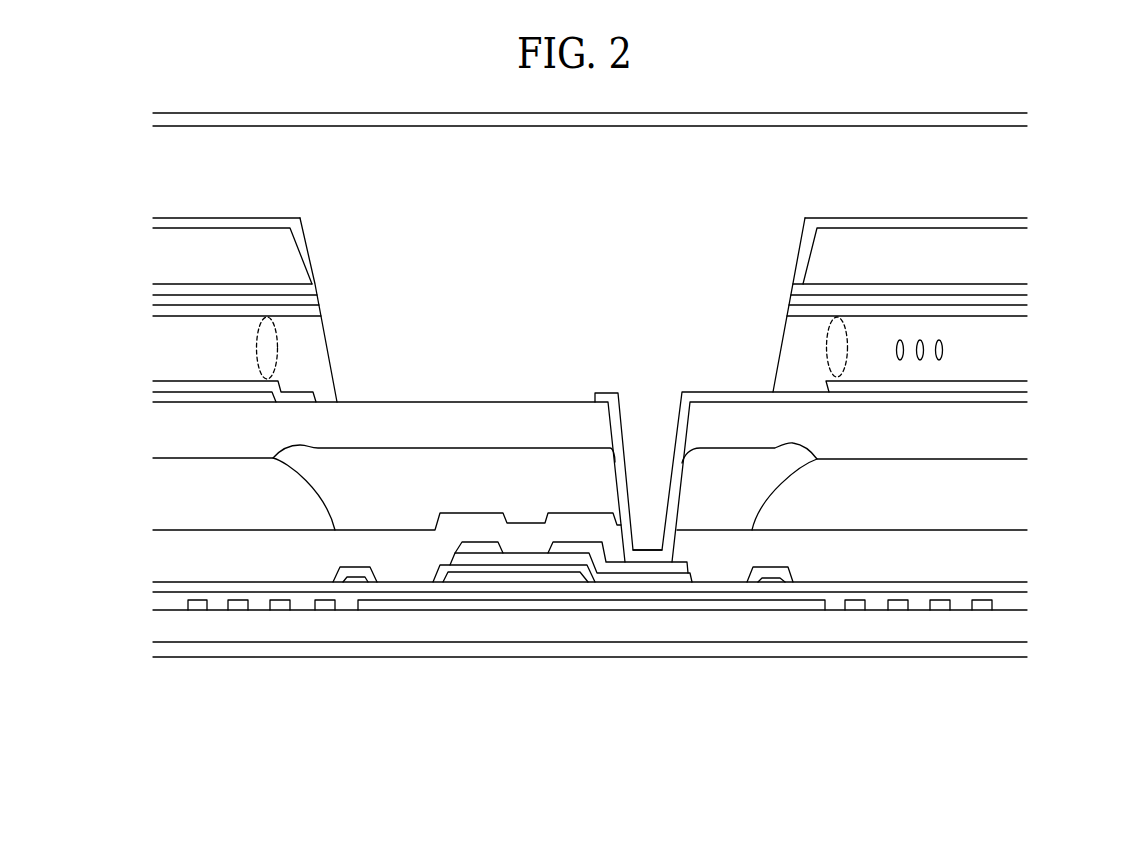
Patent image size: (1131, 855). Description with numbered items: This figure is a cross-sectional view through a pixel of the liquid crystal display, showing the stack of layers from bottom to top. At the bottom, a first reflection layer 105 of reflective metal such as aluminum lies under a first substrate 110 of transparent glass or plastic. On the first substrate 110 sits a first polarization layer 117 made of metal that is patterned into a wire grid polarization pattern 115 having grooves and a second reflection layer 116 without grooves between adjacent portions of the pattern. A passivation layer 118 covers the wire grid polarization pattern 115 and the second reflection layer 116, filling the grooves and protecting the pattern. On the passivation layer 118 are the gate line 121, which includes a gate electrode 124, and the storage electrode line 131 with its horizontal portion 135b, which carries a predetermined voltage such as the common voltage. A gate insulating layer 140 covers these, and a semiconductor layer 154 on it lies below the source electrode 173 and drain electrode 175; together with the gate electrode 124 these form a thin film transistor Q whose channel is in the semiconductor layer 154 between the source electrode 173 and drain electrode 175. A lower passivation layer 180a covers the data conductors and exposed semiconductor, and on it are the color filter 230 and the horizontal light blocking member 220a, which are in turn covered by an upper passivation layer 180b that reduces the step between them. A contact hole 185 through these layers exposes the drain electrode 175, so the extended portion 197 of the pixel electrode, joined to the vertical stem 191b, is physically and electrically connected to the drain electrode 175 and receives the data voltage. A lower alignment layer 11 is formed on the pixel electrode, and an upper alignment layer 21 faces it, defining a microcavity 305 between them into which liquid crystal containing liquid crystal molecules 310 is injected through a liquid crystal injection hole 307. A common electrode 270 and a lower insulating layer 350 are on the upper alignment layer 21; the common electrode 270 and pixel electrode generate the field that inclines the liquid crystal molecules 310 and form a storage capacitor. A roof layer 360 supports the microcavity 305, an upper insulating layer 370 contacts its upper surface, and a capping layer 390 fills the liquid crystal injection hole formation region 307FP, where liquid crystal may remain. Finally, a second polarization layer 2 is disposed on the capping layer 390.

The second polarization layer 2 is at (1027, 117).
The capping layer 390 is at (1013, 165).
The upper insulating layer 370 is at (1027, 224).
The roof layer 360 is at (1013, 258).
The lower insulating layer 350 is at (1027, 290).
The common electrode 270 is at (1027, 303).
The upper alignment layer 21 is at (1027, 314).
The microcavity 305 is at (1013, 348).
The lower alignment layer 11 is at (1027, 386).
The extended portion 197 is at (720, 392).
The vertical stem 191b is at (1027, 399).
The contact hole 185 is at (646, 394).
The upper passivation layer 180b is at (167, 427).
The color filter 230 is at (167, 497).
The horizontal light blocking member 220a is at (363, 492).
The lower passivation layer 180a is at (1017, 555).
The gate insulating layer 140 is at (1027, 584).
The horizontal portion 135b is at (357, 585).
The storage electrode line 131 is at (770, 588).
The gate electrode 124 is at (502, 578).
The gate line 121 is at (457, 585).
The semiconductor layer 154 is at (533, 557).
The source electrode 173 is at (485, 548).
The drain electrode 175 is at (582, 550).
The thin film transistor Q is at (598, 703).
The passivation layer 118 is at (1020, 603).
The second reflection layer 116 is at (663, 606).
The wire grid polarization pattern 115 is at (935, 612).
The first polarization layer 117 is at (1027, 721).
The first substrate 110 is at (1017, 626).
The first reflection layer 105 is at (1027, 657).
The liquid crystal injection hole 307 is at (277, 335).
The liquid crystal injection hole formation region 307FP is at (491, 278).
The liquid crystal molecules 310 is at (943, 348).